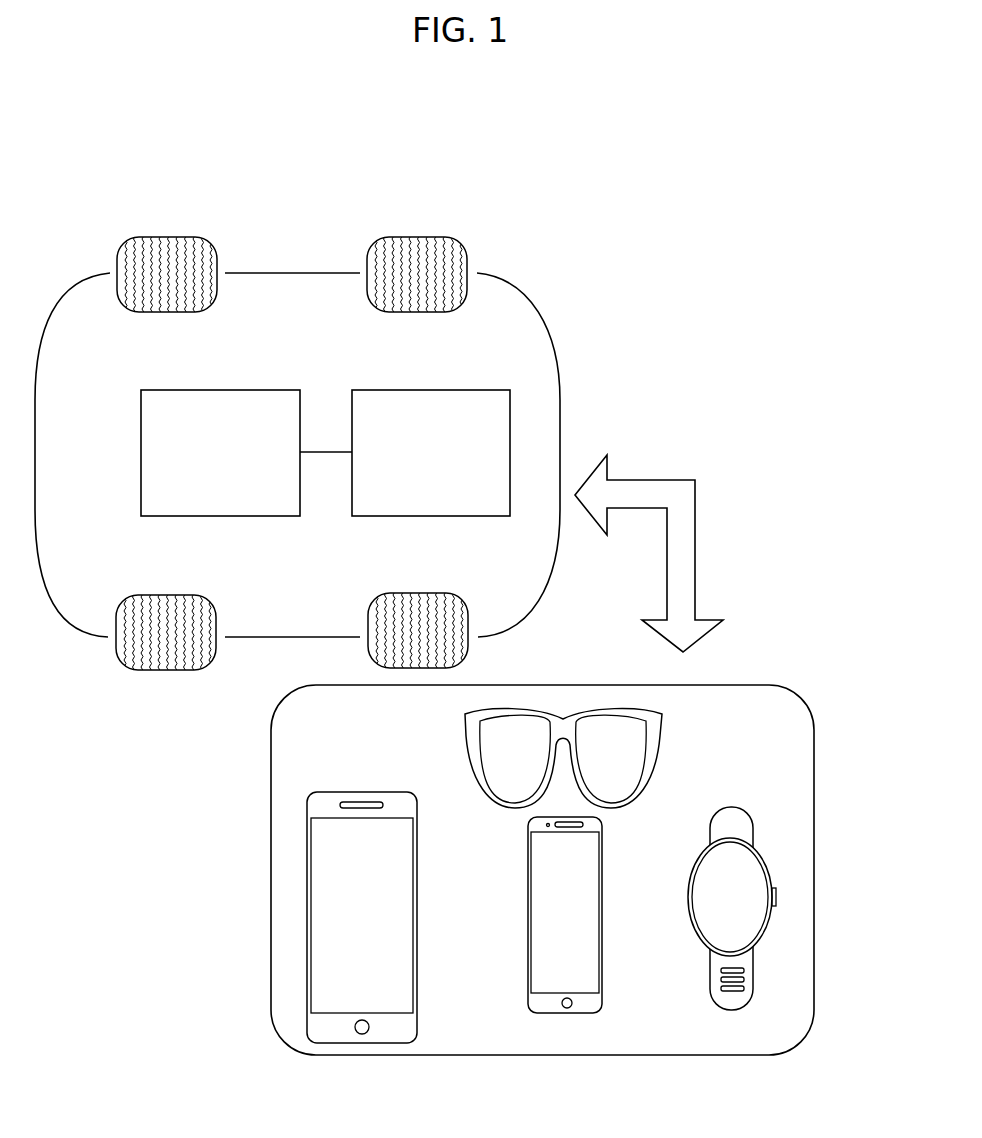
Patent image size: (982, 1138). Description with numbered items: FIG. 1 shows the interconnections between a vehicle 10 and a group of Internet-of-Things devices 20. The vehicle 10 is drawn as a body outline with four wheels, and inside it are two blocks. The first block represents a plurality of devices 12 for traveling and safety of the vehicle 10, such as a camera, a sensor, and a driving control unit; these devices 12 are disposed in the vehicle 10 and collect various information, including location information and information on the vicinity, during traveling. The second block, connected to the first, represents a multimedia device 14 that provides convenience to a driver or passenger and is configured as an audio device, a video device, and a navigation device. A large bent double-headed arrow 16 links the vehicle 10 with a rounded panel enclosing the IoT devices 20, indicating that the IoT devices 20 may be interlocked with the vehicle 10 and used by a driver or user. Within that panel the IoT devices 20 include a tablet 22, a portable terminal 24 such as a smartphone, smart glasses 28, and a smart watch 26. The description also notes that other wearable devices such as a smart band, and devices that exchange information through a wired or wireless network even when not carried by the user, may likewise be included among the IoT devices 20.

The vehicle 10 is at (561, 352).
The devices for traveling and safety 12 is at (216, 384).
The multimedia device 14 is at (425, 384).
The communication link arrow 16 is at (659, 468).
The IoT devices 20 is at (820, 872).
The tablet 22 is at (371, 788).
The portable terminal 24 is at (513, 932).
The smart watch 26 is at (700, 968).
The smart glasses 28 is at (664, 760).